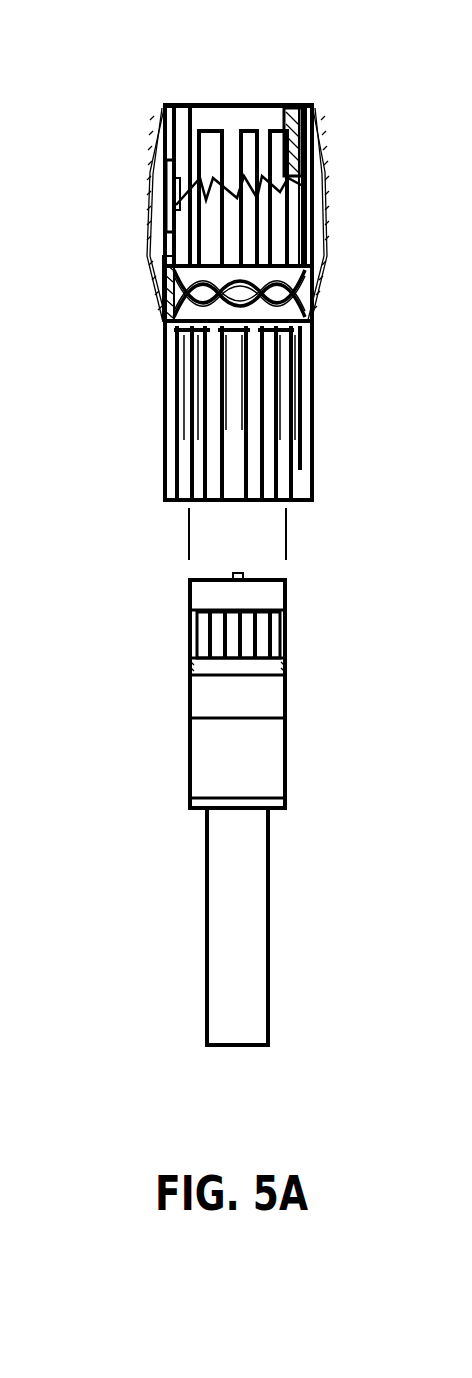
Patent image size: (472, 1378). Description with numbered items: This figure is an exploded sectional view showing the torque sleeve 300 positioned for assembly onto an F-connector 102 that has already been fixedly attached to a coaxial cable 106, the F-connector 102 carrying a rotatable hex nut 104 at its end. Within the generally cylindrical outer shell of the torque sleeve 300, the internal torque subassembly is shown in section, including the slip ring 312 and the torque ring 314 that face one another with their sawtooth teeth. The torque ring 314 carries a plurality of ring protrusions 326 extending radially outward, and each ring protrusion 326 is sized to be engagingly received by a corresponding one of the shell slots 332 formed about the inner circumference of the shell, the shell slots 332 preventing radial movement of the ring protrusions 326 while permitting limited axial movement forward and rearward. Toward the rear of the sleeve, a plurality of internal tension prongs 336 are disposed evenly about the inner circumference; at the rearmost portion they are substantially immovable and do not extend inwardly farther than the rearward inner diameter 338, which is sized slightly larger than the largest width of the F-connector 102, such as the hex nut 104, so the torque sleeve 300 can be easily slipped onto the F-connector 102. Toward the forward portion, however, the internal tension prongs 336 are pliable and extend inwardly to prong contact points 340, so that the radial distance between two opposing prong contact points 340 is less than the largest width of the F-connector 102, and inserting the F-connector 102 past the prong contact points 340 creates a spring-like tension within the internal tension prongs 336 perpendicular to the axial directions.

The torque sleeve 300 is at (233, 285).
The slip ring 312 is at (279, 127).
The torque ring 314 is at (296, 228).
The ring protrusions 326 is at (163, 223).
The shell slots 332 is at (161, 258).
The internal tension prongs 336 is at (262, 400).
The prong contact points 340 is at (195, 337).
The rearward inner diameter 338 is at (284, 535).
The F-connector 102 is at (295, 690).
The hex nut 104 is at (285, 628).
The coaxial cable 106 is at (270, 972).